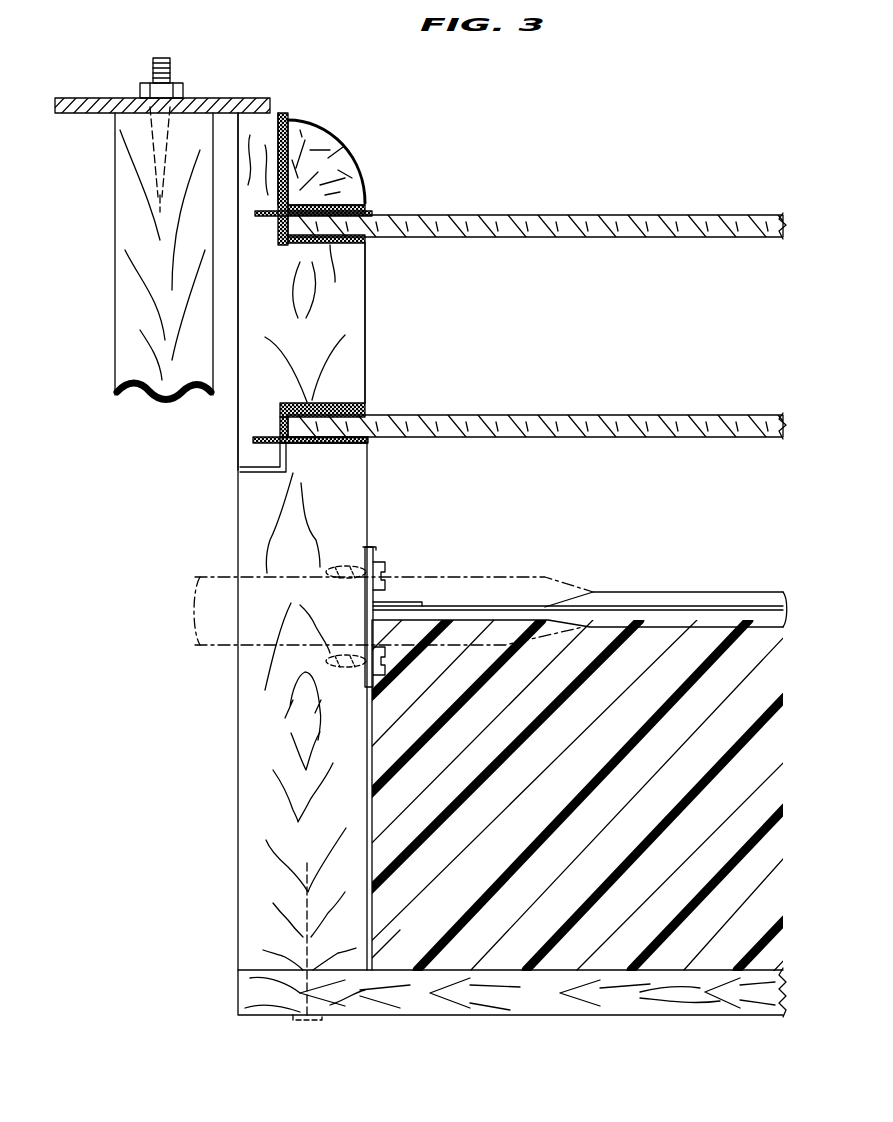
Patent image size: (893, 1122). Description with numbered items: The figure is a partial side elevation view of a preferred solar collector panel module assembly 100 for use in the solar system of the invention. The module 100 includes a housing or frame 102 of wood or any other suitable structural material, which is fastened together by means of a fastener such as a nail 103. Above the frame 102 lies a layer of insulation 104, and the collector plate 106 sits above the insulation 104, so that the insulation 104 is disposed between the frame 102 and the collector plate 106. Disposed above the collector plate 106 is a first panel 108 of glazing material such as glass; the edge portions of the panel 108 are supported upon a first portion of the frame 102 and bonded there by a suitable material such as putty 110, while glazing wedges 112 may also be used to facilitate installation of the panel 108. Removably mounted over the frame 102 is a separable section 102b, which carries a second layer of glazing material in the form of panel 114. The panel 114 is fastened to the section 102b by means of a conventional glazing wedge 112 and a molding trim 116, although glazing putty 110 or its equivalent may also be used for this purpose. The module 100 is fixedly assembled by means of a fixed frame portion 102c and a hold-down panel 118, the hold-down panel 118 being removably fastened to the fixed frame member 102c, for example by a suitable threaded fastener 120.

The solar collector panel module assembly 100 is at (166, 651).
The frame 102 is at (240, 808).
The separable section 102b is at (360, 320).
The fixed frame portion 102c is at (115, 320).
The nail 103 is at (305, 1020).
The layer of insulation 104 is at (672, 953).
The collector plate 106 is at (630, 592).
The first panel 108 is at (598, 413).
The putty 110 is at (366, 210).
The glazing wedge 112 is at (265, 214).
The panel 114 is at (590, 215).
The molding trim 116 is at (368, 98).
The hold-down panel 118 is at (233, 98).
The threaded fastener 120 is at (154, 78).